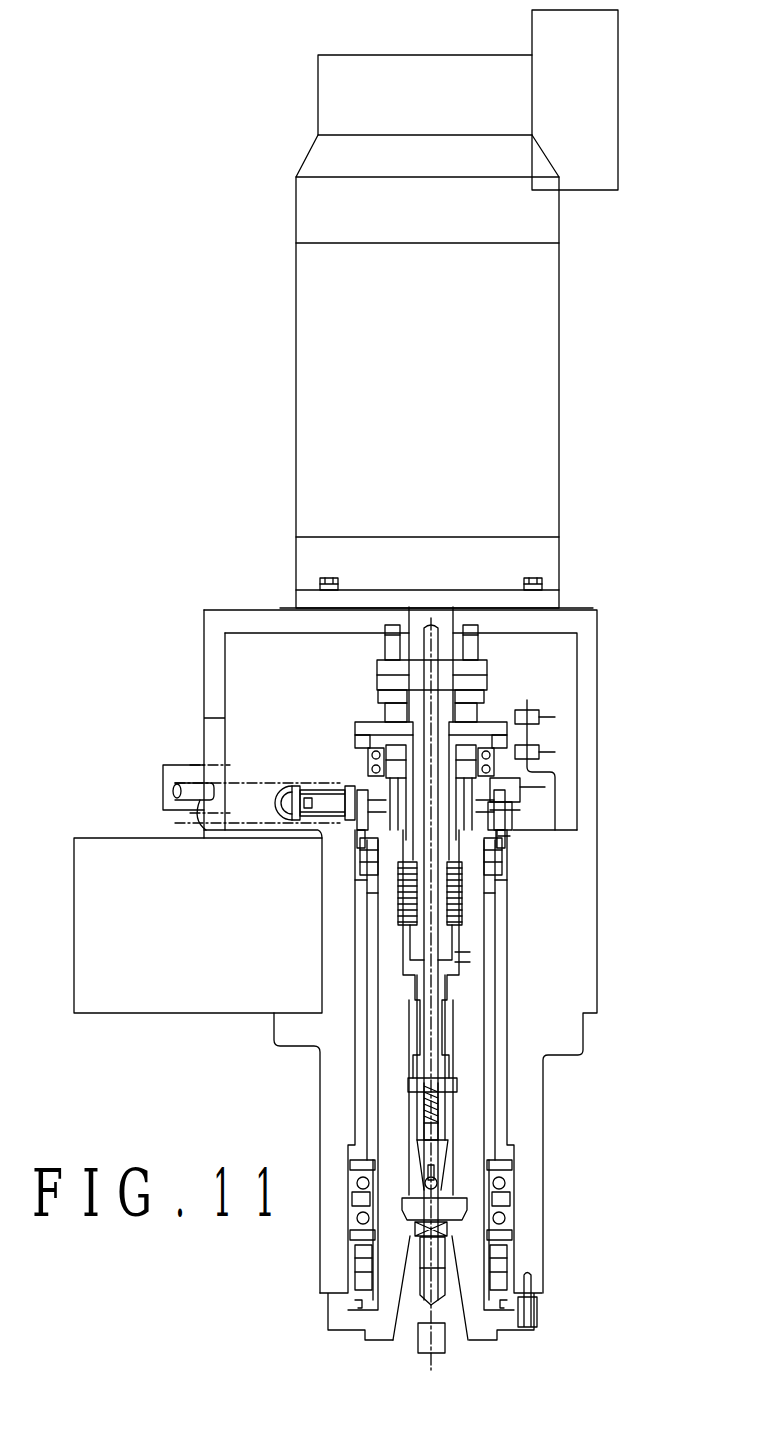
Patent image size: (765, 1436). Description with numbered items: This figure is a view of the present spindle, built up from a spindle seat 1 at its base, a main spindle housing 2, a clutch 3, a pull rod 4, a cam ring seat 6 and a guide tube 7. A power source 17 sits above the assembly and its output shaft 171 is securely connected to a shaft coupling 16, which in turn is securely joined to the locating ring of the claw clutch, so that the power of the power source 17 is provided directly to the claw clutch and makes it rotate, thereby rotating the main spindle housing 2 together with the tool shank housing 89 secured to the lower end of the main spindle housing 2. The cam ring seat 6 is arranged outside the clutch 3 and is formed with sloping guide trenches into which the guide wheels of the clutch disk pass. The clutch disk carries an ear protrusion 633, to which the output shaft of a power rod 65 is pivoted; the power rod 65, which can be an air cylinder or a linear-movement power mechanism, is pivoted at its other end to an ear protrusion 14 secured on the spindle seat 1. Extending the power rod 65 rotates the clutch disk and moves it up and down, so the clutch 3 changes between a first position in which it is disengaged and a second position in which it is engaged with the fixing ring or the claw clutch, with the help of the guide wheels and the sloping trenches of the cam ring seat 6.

The power source 17 is at (305, 380).
The output shaft 171 is at (415, 648).
The shaft coupling 16 is at (357, 684).
The power rod 65 is at (258, 782).
The ear protrusion 14 is at (183, 765).
The ear protrusion 633 is at (318, 790).
The clutch 3 is at (502, 790).
The cam ring seat 6 is at (500, 818).
The pull rod 4 is at (445, 882).
The guide tube 7 is at (440, 918).
The main spindle housing 2 is at (470, 1047).
The spindle seat 1 is at (292, 1042).
The tool shank housing 89 is at (452, 1293).